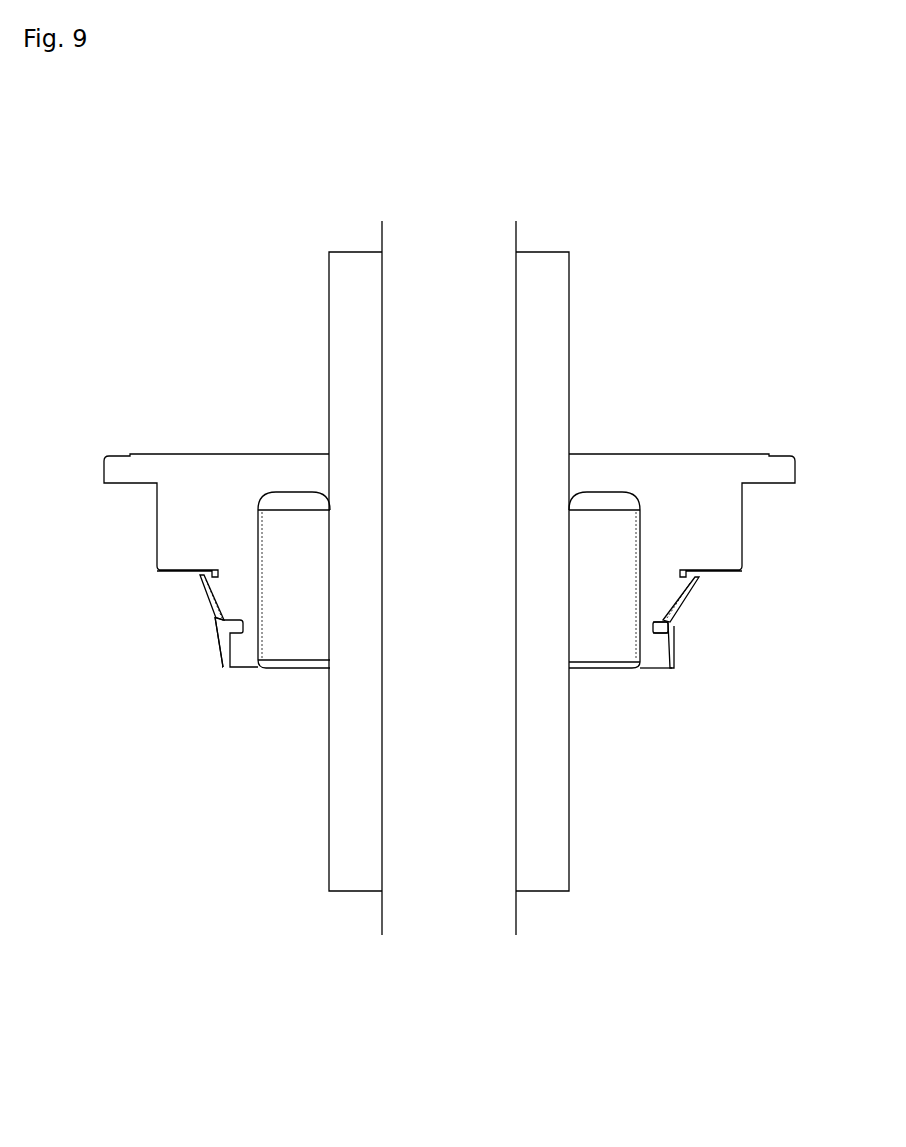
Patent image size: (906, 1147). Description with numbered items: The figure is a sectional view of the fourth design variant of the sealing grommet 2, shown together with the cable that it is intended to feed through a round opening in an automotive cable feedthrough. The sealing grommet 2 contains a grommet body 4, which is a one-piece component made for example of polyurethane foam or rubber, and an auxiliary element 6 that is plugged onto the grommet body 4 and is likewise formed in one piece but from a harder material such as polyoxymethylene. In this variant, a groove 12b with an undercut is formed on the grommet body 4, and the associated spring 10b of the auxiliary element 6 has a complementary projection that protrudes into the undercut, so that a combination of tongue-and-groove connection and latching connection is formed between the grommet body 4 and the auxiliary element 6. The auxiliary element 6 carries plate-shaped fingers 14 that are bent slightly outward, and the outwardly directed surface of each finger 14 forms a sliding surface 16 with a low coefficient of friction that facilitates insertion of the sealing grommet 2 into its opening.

The sealing grommet 2 is at (630, 275).
The grommet body 4 is at (212, 479).
The auxiliary element 6 is at (219, 640).
The finger 14 is at (205, 597).
The sliding surface 16 is at (681, 622).
The spring 10b is at (667, 623).
The groove 12b is at (663, 637).